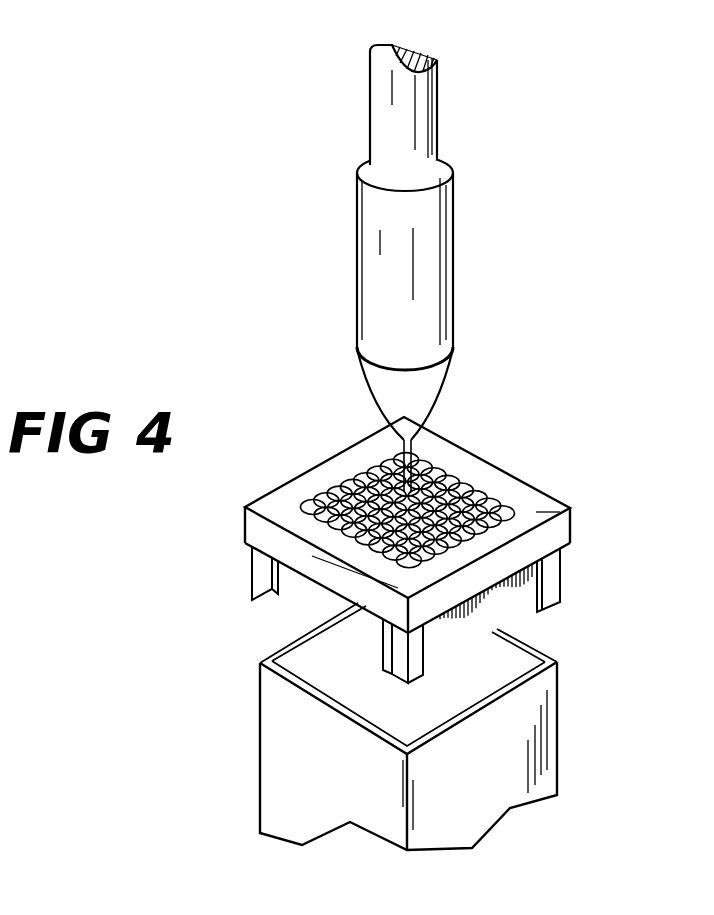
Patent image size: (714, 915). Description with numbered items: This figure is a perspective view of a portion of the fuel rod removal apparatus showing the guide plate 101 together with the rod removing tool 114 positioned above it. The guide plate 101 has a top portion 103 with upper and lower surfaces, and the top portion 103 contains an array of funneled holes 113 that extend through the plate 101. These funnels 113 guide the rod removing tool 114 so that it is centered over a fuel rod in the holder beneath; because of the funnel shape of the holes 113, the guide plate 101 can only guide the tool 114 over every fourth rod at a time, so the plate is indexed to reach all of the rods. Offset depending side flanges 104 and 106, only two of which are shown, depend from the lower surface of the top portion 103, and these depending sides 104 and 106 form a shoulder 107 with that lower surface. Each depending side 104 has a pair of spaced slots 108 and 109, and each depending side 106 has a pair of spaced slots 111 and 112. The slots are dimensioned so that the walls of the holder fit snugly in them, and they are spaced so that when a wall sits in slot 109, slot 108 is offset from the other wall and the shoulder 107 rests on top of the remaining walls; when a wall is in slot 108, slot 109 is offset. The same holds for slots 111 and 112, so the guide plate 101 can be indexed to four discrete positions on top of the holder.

The guide plate 101 is at (285, 494).
The top portion 103 is at (548, 518).
The depending side flange 104 is at (330, 613).
The depending side flange 106 is at (556, 722).
The shoulder 107 is at (572, 550).
The slot 108 is at (256, 596).
The slot 109 is at (388, 662).
The slot 111 is at (470, 637).
The slot 112 is at (562, 612).
The funneled hole 113 is at (352, 470).
The rod removing tool 114 is at (378, 111).